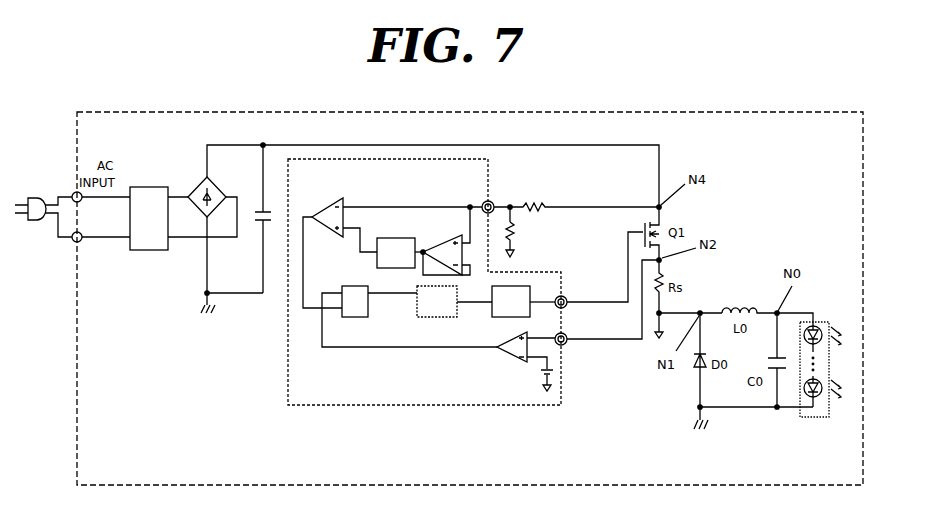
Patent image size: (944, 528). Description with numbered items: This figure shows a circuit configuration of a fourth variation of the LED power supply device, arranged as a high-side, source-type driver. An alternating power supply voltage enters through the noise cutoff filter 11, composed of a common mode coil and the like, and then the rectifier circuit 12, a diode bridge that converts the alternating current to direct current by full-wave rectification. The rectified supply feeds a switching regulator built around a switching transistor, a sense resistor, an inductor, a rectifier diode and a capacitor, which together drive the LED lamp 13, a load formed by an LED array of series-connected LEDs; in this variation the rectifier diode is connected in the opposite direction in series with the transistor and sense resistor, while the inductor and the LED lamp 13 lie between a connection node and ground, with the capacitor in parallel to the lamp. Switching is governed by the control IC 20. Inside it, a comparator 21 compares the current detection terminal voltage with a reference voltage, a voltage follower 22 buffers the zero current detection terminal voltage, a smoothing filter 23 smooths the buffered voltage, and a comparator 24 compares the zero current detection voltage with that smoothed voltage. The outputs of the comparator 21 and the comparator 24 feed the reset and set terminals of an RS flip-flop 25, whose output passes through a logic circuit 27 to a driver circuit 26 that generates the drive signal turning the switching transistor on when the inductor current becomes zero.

The noise cutoff filter 11 is at (145, 251).
The rectifier circuit 12 is at (218, 185).
The LED lamp 13 is at (829, 417).
The control IC 20 is at (287, 371).
The comparator 21 is at (507, 361).
The voltage follower 22 is at (455, 242).
The smoothing filter 23 is at (397, 238).
The comparator 24 is at (328, 207).
The RS flip-flop 25 is at (360, 318).
The driver circuit 26 is at (513, 318).
The logic circuit 27 is at (440, 318).